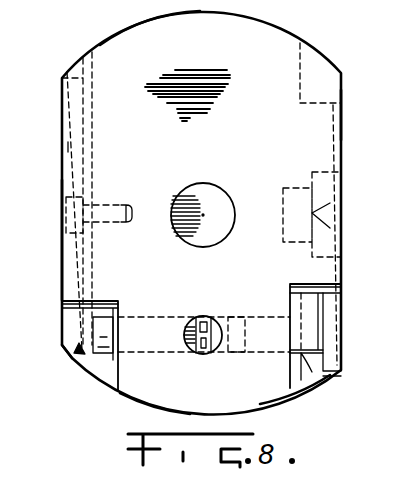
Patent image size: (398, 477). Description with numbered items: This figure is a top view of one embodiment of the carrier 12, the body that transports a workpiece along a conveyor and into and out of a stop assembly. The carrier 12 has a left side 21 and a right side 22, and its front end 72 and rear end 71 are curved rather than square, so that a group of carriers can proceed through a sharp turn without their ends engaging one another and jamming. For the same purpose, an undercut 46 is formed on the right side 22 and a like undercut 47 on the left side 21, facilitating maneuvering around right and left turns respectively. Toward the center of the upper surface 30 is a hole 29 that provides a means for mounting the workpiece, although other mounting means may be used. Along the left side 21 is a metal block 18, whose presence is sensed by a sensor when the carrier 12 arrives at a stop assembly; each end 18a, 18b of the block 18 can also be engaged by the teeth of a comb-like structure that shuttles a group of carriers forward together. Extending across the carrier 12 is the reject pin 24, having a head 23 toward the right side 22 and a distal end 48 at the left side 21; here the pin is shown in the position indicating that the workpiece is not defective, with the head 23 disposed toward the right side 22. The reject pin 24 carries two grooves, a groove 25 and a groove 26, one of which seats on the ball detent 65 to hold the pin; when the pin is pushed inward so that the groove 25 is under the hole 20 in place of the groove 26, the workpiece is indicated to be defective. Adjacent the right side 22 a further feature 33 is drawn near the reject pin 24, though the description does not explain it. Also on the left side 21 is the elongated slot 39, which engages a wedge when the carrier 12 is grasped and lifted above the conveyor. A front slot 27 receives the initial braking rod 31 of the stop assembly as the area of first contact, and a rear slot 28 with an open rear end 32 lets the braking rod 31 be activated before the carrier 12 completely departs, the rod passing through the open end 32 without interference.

The carrier 12 is at (306, 33).
The metal block 18 is at (80, 97).
The end of the block 18a is at (78, 77).
The end of the block 18b is at (72, 301).
The hole 20 is at (188, 316).
The left side 21 is at (62, 257).
The right side 22 is at (343, 116).
The head 23 is at (342, 370).
The reject pin 24 is at (306, 313).
The groove 25 is at (234, 357).
The groove 26 is at (203, 355).
The front slot 27 is at (310, 58).
The rear slot 28 is at (296, 388).
The hole 29 is at (224, 196).
The upper surface 30 is at (243, 42).
The initial braking rod 31 is at (390, 253).
The rear end 32 is at (314, 366).
The latch 33 is at (344, 218).
The elongated slot 39 is at (70, 362).
The undercut 46 is at (333, 143).
The undercut 47 is at (68, 147).
The distal end 48 is at (104, 357).
The ball detent 65 is at (206, 316).
The rear end 71 is at (150, 407).
The front end 72 is at (146, 22).